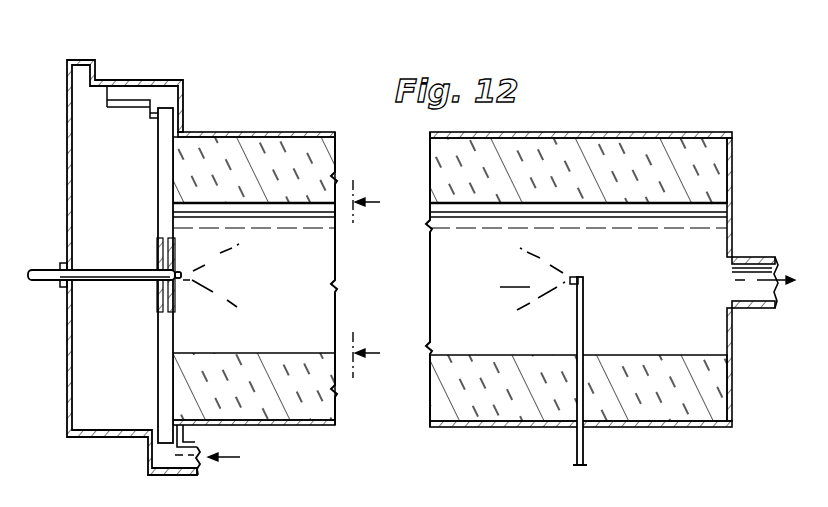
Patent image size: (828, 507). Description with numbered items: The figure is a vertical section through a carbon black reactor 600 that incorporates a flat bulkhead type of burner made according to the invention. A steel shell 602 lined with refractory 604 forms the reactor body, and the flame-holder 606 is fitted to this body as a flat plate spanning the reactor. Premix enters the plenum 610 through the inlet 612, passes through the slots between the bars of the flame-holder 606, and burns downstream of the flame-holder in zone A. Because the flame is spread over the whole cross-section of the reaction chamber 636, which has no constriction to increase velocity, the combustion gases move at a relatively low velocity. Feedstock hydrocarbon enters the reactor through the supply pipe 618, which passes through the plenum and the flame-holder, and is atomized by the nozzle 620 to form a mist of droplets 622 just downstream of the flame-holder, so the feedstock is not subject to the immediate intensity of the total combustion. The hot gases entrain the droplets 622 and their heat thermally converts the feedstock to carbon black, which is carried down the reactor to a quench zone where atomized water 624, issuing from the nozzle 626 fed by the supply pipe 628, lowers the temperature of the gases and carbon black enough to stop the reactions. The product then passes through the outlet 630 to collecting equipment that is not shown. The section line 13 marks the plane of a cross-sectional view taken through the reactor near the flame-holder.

The carbon black reactor 600 is at (321, 126).
The steel shell 602 is at (608, 132).
The refractory 604 is at (243, 150).
The flame-holder 606 is at (154, 338).
The plenum 610 is at (128, 237).
The inlet 612 is at (83, 58).
The supply pipe 618 is at (40, 268).
The nozzle 620 is at (185, 284).
The droplets 622 is at (262, 277).
The atomized water 624 is at (530, 287).
The nozzle 626 is at (581, 277).
The supply pipe 628 is at (585, 451).
The outlet 630 is at (720, 440).
The reaction chamber 636 is at (316, 334).
The section line 13- 13 is at (385, 279).